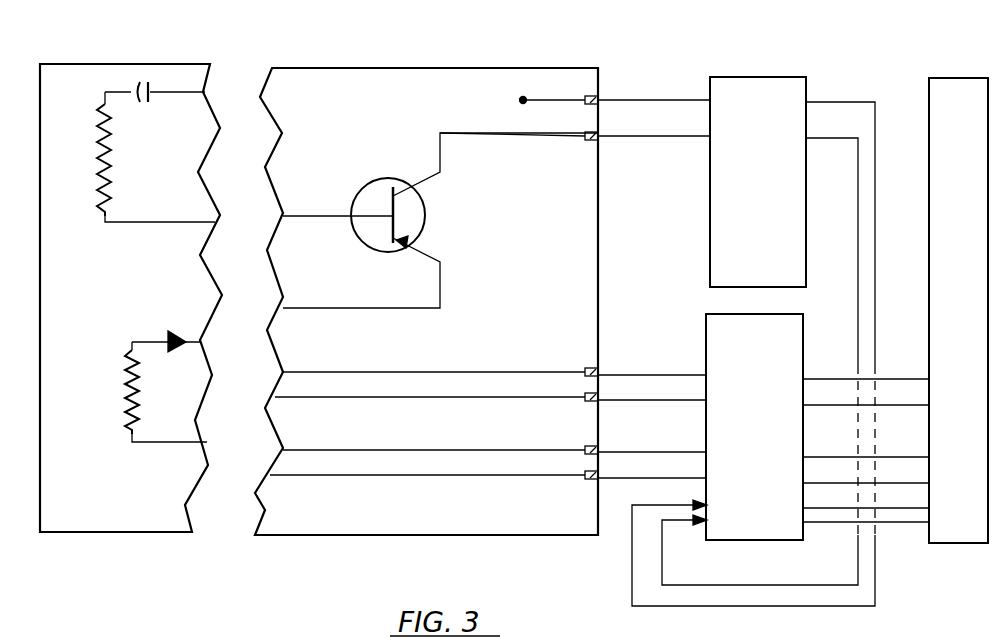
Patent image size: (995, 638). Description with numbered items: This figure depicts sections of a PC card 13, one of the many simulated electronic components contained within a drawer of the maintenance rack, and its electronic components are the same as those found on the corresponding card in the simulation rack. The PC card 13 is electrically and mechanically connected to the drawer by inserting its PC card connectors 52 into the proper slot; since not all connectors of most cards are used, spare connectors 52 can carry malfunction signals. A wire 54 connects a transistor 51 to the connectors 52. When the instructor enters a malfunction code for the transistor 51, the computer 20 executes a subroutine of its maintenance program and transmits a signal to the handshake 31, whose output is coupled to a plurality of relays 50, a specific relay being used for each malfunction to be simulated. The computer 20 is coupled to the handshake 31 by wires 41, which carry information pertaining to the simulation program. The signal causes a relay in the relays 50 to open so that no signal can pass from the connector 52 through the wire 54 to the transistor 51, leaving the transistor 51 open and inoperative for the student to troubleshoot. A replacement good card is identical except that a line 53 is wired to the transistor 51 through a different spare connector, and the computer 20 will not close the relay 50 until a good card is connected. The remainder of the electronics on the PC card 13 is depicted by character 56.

The PC card 13 is at (97, 64).
The computer 20 is at (960, 78).
The handshake 31 is at (706, 314).
The wires 41 is at (836, 402).
The relays 50 is at (768, 77).
The transistor 51 is at (365, 190).
The PC card connectors 52 is at (598, 98).
The line 53 is at (521, 100).
The wire 54 is at (534, 137).
The remainder of the electronics 56 is at (150, 96).